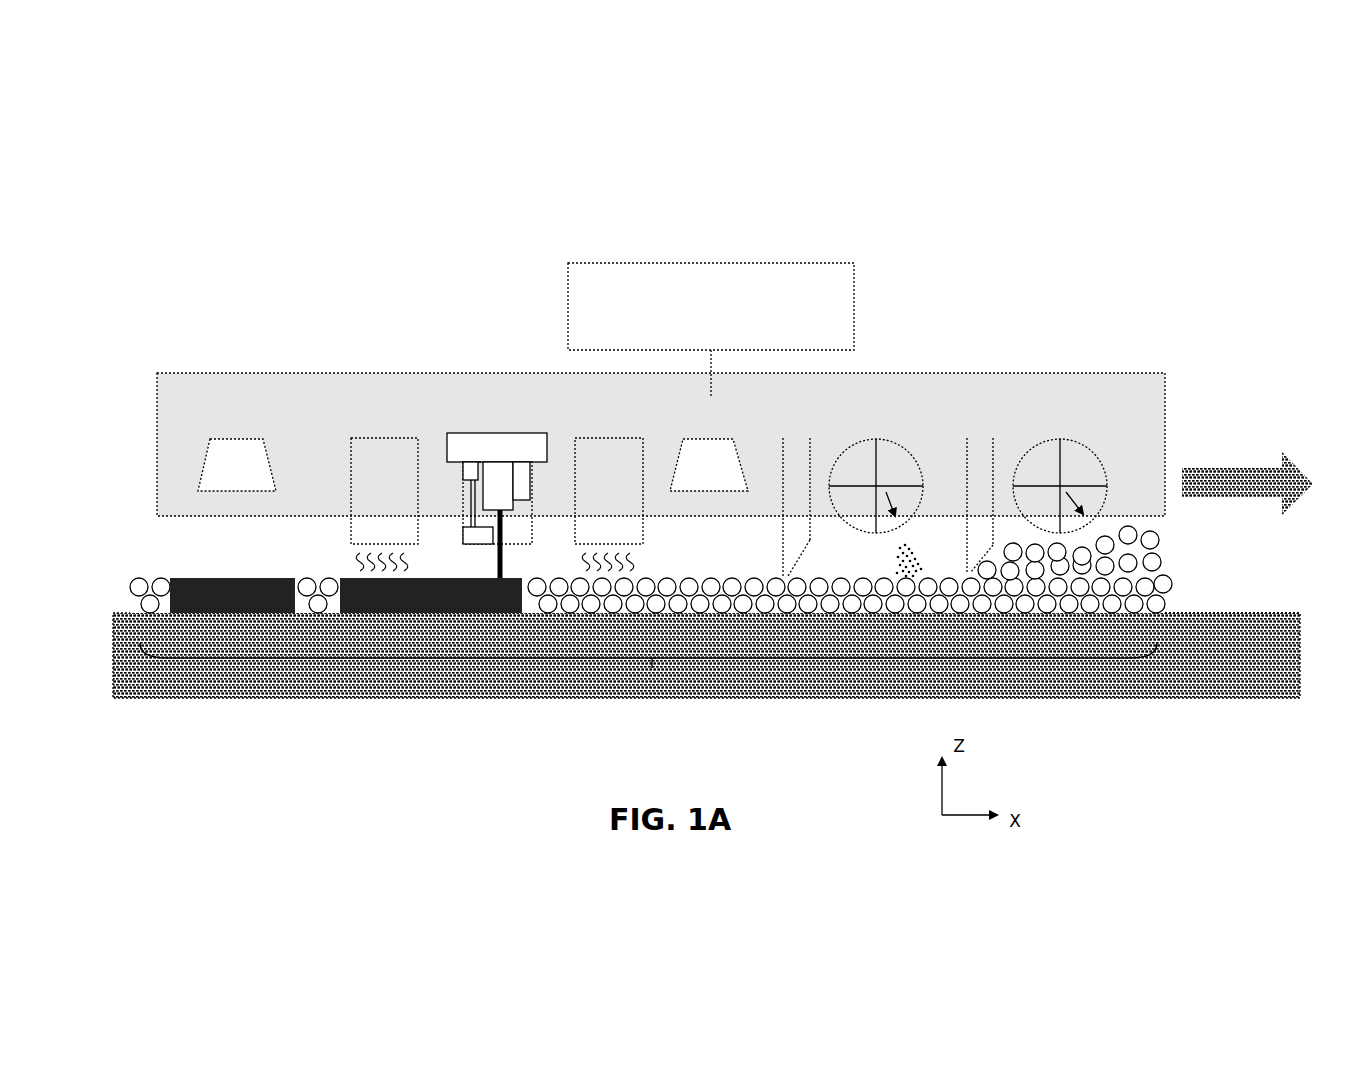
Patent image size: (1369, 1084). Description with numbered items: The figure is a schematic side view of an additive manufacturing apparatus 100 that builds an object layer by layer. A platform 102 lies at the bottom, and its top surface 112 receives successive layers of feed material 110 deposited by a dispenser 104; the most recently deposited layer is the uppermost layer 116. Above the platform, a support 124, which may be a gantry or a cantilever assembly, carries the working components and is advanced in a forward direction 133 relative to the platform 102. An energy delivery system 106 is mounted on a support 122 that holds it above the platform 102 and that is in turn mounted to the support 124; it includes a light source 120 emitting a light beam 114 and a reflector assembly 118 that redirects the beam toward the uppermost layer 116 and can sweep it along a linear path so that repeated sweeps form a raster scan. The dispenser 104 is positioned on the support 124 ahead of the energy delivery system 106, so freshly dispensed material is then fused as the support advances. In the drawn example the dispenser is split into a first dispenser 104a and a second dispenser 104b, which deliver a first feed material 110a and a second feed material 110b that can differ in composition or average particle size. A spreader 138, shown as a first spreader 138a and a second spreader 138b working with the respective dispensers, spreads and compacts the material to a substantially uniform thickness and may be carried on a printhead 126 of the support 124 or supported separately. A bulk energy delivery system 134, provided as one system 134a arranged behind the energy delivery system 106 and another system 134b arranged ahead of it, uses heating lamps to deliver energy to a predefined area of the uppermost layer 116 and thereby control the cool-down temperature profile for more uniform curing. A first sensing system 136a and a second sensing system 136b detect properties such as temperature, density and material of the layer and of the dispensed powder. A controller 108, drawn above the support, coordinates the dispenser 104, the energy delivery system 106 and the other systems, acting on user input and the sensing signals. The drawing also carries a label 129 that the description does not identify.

The additive manufacturing apparatus 100 is at (1212, 258).
The platform 102 is at (706, 655).
The dispenser 104 is at (1099, 467).
The first dispenser 104a is at (1083, 447).
The second dispenser 104b is at (908, 450).
The energy delivery system 106 is at (479, 488).
The controller 108 is at (711, 329).
The feed material 110 is at (709, 569).
The first feed material 110a is at (1168, 582).
The second feed material 110b is at (905, 562).
The top surface 112 is at (1277, 611).
The light beam 114 is at (497, 573).
The uppermost layer 116 is at (668, 589).
The reflector assembly 118 is at (470, 526).
The light source 120 is at (466, 475).
The support 122 is at (513, 450).
The support 124 is at (713, 433).
The printhead 126 is at (1168, 395).
The build area 129 is at (648, 672).
The forward direction 133 is at (1247, 483).
The bulk energy delivery system 134 is at (346, 488).
The bulk energy delivery system 134a is at (351, 478).
The bulk energy delivery system 134b is at (643, 475).
The first sensing system 136a is at (213, 475).
The second sensing system 136b is at (725, 454).
The spreader 138 is at (844, 490).
The first spreader 138a is at (800, 443).
The second spreader 138b is at (988, 440).